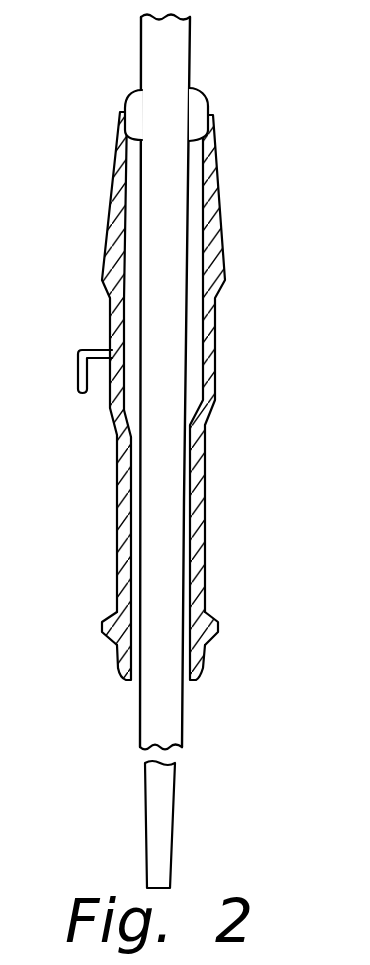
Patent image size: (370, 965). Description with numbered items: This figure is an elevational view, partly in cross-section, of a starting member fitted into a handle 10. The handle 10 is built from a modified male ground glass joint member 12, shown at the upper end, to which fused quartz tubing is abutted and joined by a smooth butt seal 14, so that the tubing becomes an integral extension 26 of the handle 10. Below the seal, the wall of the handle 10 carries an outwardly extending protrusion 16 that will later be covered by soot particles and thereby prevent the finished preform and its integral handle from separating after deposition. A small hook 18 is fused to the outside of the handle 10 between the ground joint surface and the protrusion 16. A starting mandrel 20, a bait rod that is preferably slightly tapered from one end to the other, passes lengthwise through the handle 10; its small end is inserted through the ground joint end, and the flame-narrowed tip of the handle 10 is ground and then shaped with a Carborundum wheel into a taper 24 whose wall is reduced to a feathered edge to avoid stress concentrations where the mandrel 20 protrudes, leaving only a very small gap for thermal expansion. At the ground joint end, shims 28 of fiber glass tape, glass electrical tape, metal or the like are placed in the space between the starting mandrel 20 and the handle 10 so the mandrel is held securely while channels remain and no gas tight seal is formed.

The handle 10 is at (143, 375).
The modified male ground glass joint member 12 is at (216, 333).
The butt seal 14 is at (210, 402).
The outwardly extending protrusion 16 is at (213, 625).
The hook 18 is at (77, 372).
The starting mandrel 20 is at (183, 720).
The taper 24 is at (204, 659).
The integral extension 26 is at (205, 537).
The shims 28 is at (128, 93).